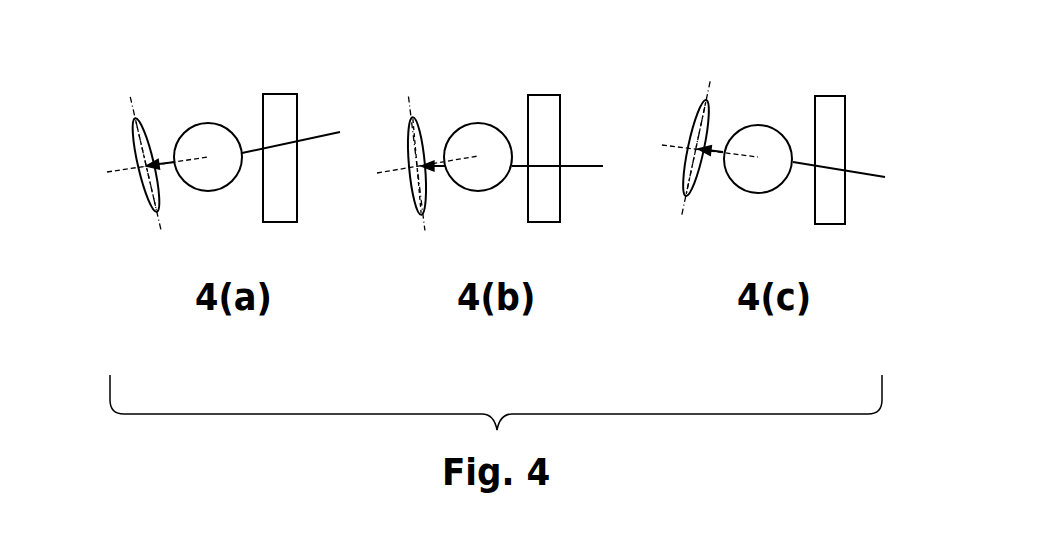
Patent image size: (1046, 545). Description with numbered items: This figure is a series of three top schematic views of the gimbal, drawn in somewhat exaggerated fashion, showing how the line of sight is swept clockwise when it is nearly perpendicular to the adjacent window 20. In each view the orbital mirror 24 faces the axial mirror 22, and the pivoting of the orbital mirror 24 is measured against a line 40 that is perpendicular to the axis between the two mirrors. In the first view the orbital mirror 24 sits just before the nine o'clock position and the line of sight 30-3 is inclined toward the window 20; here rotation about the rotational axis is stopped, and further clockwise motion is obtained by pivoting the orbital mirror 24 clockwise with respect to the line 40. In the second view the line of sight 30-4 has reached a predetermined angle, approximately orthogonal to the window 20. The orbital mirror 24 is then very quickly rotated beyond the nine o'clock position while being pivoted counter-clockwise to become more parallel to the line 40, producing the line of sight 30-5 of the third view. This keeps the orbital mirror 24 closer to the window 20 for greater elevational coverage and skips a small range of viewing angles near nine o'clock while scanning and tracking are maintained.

The window 20 is at (248, 120).
The axial mirror 22 is at (184, 119).
The orbital mirror 24 is at (380, 145).
The line perpendicular to the axis between the orbital mirror and the axial mirror 40 is at (378, 132).
The line of sight 30-3 is at (310, 116).
The line of sight 30-4 is at (582, 194).
The line of sight 30-5 is at (876, 188).